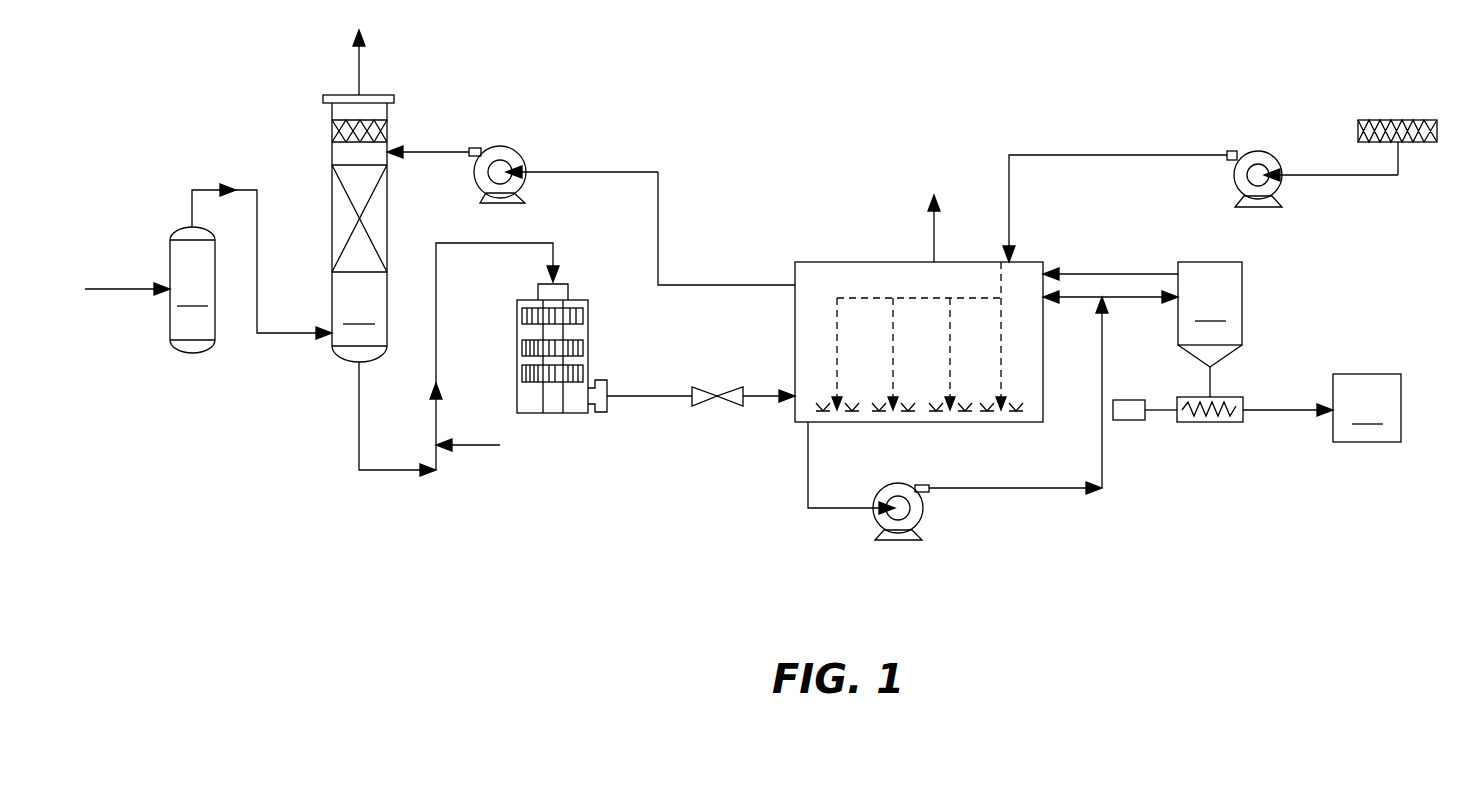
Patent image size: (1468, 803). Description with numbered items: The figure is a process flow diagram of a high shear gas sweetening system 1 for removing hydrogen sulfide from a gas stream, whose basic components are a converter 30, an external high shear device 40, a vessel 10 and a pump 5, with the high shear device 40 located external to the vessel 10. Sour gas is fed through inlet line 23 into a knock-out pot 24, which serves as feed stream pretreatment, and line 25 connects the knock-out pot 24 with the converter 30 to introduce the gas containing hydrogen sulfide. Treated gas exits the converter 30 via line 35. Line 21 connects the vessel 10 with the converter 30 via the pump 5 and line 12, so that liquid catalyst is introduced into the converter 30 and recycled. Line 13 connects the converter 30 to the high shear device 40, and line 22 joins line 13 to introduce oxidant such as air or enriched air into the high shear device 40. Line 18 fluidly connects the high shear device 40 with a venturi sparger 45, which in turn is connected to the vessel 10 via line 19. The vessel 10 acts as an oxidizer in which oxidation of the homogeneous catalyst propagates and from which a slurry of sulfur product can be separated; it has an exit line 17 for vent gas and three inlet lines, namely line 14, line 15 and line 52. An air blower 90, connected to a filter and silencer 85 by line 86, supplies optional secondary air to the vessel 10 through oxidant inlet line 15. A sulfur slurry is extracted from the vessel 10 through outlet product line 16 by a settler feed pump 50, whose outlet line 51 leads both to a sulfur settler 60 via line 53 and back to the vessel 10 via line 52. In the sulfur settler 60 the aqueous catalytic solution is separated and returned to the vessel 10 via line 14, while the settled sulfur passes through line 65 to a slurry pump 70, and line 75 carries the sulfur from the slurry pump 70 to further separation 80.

The high shear gas sweetening system 1 is at (762, 74).
The pump 5 is at (508, 150).
The vessel 10 is at (850, 298).
The line 12 is at (422, 152).
The line 13 is at (506, 250).
The inlet line 14 is at (1136, 272).
The oxidant inlet line 15 is at (1010, 212).
The outlet product line 16 is at (808, 464).
The exit line 17 is at (932, 242).
The line 18 is at (673, 416).
The line 19 is at (763, 416).
The line 21 is at (760, 285).
The line 22 is at (494, 448).
The inlet line 23 is at (122, 288).
The knock-out pot 24 is at (192, 290).
The line 25 is at (207, 190).
The converter 30 is at (358, 228).
The line 35 is at (362, 76).
The high shear device 40 is at (570, 414).
The venturi sparger 45 is at (712, 387).
The settler feed pump 50 is at (911, 542).
The line 51 is at (1008, 488).
The line 52 is at (1073, 305).
The line 53 is at (1137, 305).
The sulfur settler 60 is at (1210, 314).
The line 65 is at (1212, 390).
The slurry pump 70 is at (1206, 424).
The line 75 is at (1287, 414).
The further separation 80 is at (1367, 408).
The filter and silencer 85 is at (1385, 120).
The line 86 is at (1358, 178).
The air blower 90 is at (1268, 154).